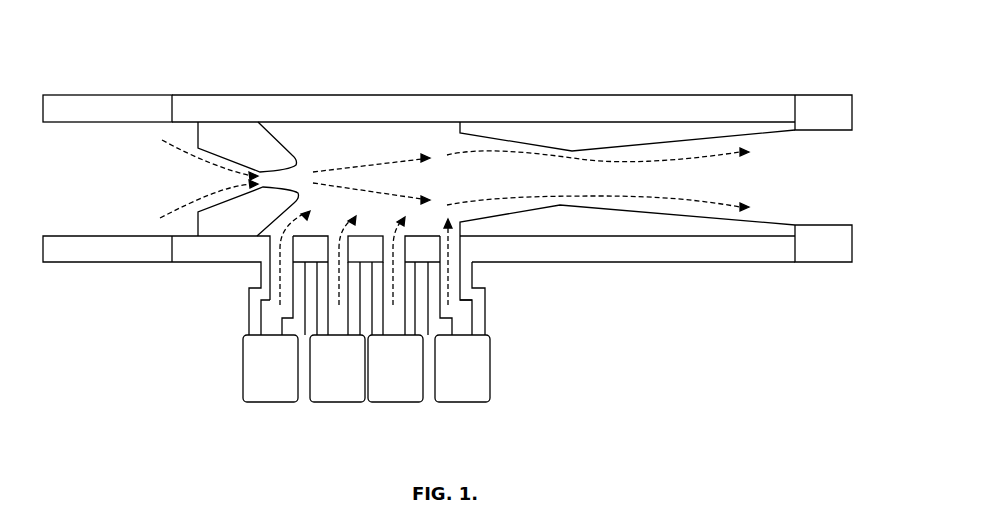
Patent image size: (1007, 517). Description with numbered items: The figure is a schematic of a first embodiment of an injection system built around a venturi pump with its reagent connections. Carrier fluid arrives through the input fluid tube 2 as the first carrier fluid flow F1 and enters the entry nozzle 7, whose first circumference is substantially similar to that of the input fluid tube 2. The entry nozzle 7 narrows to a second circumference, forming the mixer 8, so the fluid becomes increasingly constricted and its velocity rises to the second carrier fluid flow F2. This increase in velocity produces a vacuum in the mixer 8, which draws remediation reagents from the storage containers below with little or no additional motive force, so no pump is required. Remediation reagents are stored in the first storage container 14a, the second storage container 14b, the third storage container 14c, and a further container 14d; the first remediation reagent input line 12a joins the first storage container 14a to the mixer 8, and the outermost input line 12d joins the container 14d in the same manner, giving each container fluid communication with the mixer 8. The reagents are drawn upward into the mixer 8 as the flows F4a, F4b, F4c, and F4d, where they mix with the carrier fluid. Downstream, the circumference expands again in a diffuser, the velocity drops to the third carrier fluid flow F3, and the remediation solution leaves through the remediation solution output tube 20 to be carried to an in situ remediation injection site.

The input fluid tube 2 is at (98, 103).
The entry nozzle 7 is at (212, 105).
The mixer 8 is at (313, 105).
The remediation solution output tube 20 is at (815, 105).
The first remediation reagent input line 12a is at (253, 307).
The slot 12d is at (478, 305).
The first storage container 14a is at (278, 372).
The second storage container 14b is at (333, 375).
The third storage container 14c is at (410, 375).
The chamber 14d is at (470, 375).
The first carrier fluid flow F1 is at (170, 158).
The second carrier fluid flow F2 is at (418, 157).
The third carrier fluid flow F3 is at (670, 160).
The remediation reagent flow F4a is at (278, 280).
The remediation reagent flow F4b is at (341, 228).
The remediation reagent flow F4c is at (395, 228).
The remediation reagent flow F4d is at (448, 273).